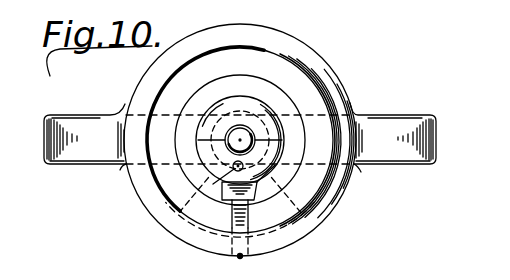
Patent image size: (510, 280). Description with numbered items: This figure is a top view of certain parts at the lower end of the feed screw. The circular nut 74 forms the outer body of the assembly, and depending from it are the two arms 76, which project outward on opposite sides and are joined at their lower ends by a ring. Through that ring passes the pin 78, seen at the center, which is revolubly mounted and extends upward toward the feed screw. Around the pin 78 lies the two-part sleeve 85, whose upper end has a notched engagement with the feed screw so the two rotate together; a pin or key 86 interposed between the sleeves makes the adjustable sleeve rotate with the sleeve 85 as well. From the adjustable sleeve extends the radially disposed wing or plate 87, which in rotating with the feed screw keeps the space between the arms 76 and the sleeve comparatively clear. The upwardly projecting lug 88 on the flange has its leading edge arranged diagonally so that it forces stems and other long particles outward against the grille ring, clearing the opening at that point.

The nut 74 is at (322, 222).
The arms 76 is at (50, 163).
The pin 78 is at (249, 129).
The two-part sleeve 85 is at (275, 130).
The pin or key 86 is at (181, 212).
The wing or plate 87 is at (252, 222).
The lug 88 is at (258, 184).